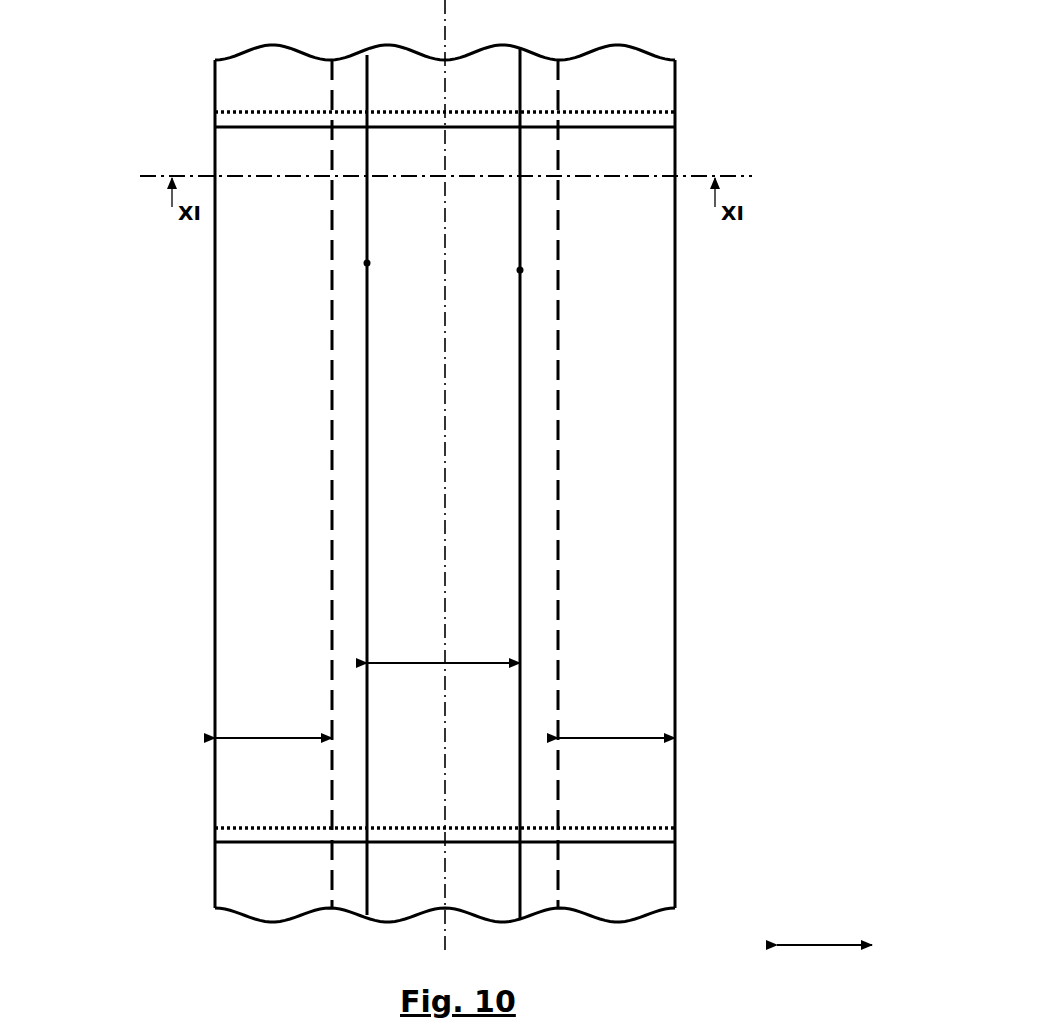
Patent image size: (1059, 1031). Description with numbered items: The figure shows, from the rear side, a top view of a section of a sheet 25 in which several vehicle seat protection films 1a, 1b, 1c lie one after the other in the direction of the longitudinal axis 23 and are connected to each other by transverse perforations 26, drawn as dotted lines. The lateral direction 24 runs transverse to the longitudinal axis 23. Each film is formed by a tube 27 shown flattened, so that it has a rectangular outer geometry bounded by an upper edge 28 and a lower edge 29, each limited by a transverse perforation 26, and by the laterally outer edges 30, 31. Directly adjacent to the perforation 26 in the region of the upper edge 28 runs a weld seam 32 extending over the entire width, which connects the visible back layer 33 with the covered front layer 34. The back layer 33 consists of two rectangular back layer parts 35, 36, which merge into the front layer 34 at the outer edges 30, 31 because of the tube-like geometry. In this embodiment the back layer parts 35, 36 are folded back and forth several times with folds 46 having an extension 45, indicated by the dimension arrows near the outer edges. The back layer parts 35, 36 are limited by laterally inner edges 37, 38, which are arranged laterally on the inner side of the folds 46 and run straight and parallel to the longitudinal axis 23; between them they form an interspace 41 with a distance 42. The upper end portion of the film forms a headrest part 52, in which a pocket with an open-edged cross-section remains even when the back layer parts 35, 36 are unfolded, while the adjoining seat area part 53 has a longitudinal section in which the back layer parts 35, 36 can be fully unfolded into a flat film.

The vehicle seat protection film 1a is at (638, 73).
The vehicle seat protection film 1b is at (652, 413).
The vehicle seat protection film 1c is at (642, 884).
The longitudinal axis 23 is at (445, 28).
The lateral direction 24 is at (830, 943).
The sheet 25 is at (176, 441).
The transverse perforation 26 is at (640, 112).
The tube 27 is at (652, 309).
The upper edge 28 is at (223, 121).
The lower edge 29 is at (230, 814).
The outer edge 30 is at (215, 569).
The outer edge 31 is at (675, 366).
The weld seam 32 is at (625, 127).
The back layer 33 is at (295, 484).
The front layer 34 is at (634, 455).
The back layer part 35 is at (273, 518).
The back layer part 36 is at (594, 484).
The inner edge 37 is at (367, 263).
The inner edge 38 is at (520, 270).
The interspace 41 is at (485, 546).
The distance 42 is at (477, 665).
The extension 45 is at (272, 740).
The fold 46 is at (250, 649).
The headrest part 52 is at (261, 212).
The seat area part 53 is at (652, 518).